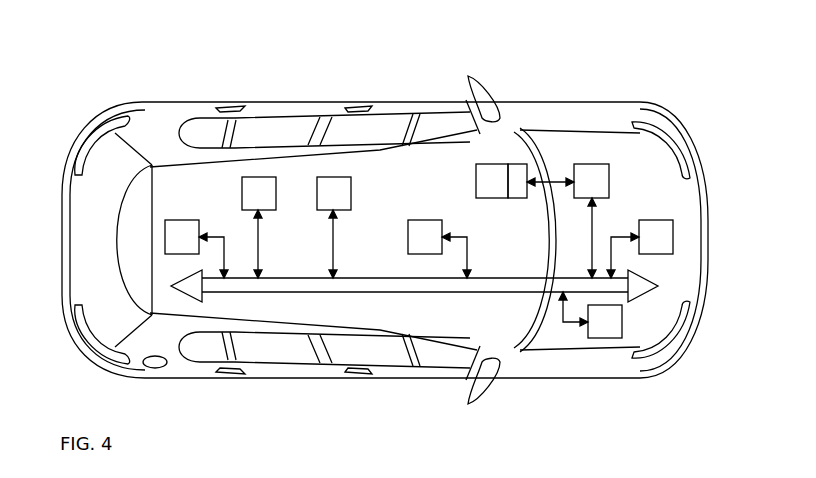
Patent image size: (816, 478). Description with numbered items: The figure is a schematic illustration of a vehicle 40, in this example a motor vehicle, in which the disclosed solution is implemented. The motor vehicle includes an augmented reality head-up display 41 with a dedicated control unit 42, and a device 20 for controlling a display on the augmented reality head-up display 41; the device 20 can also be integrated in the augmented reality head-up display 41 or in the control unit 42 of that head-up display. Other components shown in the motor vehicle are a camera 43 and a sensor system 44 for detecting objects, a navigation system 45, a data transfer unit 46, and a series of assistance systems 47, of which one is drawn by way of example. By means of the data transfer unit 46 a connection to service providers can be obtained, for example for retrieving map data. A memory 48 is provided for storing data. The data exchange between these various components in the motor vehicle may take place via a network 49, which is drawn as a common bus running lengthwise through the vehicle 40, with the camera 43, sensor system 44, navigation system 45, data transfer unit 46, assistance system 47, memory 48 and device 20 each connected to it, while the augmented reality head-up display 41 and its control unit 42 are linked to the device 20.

The vehicle 40 is at (602, 102).
The device for controlling a display 20 is at (608, 182).
The augmented reality head-up display 41 is at (492, 165).
The control unit 42 is at (518, 165).
The camera 43 is at (420, 220).
The sensor system 44 is at (605, 337).
The navigation system 45 is at (248, 177).
The data transfer unit 46 is at (323, 177).
The assistance system 47 is at (657, 220).
The memory 48 is at (181, 220).
The network 49 is at (280, 292).